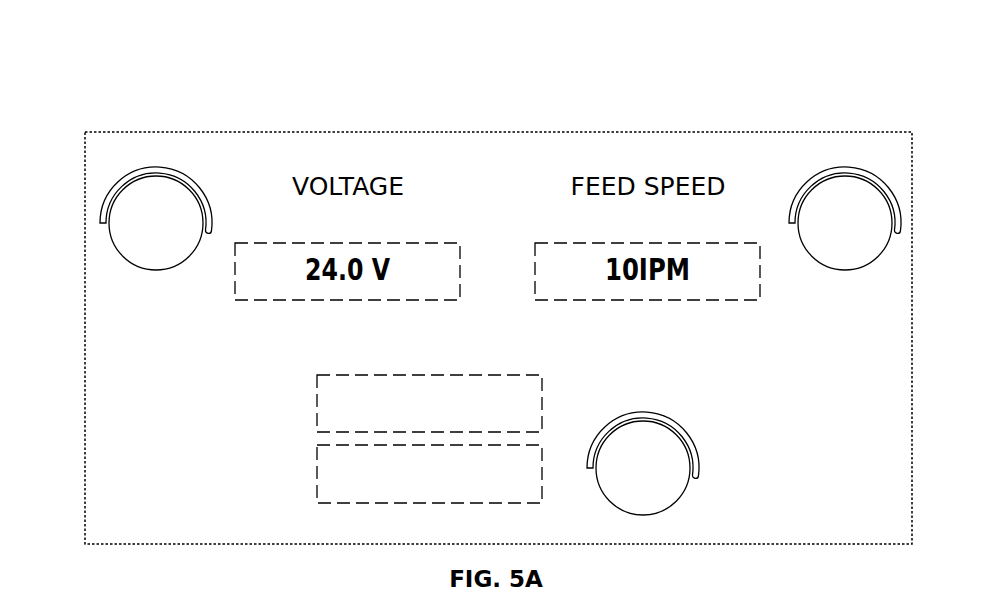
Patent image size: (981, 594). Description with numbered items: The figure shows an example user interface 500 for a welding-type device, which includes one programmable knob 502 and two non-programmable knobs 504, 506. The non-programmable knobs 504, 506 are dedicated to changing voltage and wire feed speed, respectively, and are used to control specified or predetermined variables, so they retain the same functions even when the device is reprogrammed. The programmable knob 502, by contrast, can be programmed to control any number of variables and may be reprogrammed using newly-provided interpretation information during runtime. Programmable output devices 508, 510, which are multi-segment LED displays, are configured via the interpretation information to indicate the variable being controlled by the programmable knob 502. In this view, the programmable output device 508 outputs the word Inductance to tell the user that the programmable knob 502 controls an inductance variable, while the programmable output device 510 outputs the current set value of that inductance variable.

The user interface 500 is at (473, 312).
The programmable knob 502 is at (669, 470).
The non-programmable knob 504 is at (161, 237).
The non-programmable knob 506 is at (840, 237).
The programmable output device 508 is at (396, 401).
The programmable output device 510 is at (396, 472).